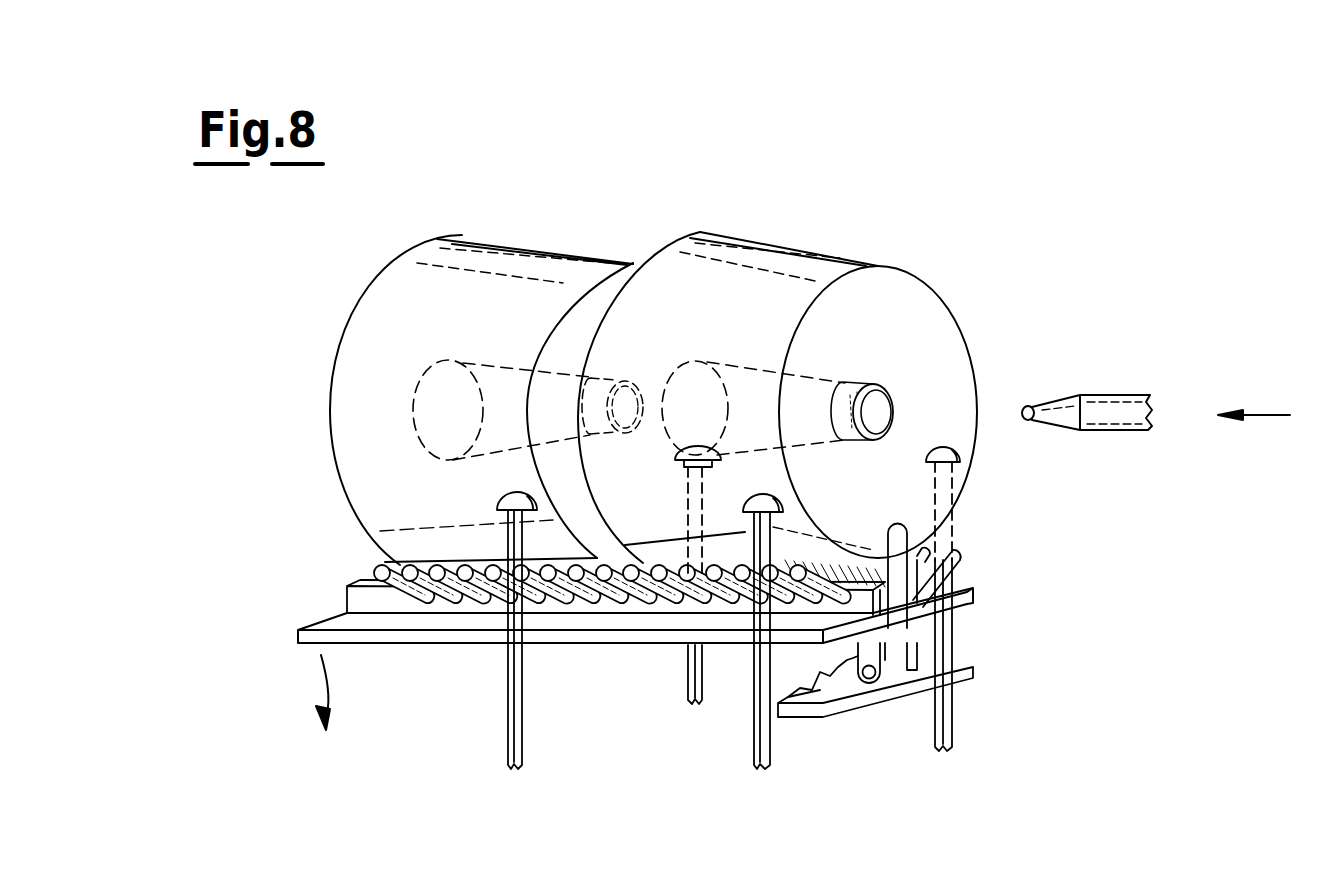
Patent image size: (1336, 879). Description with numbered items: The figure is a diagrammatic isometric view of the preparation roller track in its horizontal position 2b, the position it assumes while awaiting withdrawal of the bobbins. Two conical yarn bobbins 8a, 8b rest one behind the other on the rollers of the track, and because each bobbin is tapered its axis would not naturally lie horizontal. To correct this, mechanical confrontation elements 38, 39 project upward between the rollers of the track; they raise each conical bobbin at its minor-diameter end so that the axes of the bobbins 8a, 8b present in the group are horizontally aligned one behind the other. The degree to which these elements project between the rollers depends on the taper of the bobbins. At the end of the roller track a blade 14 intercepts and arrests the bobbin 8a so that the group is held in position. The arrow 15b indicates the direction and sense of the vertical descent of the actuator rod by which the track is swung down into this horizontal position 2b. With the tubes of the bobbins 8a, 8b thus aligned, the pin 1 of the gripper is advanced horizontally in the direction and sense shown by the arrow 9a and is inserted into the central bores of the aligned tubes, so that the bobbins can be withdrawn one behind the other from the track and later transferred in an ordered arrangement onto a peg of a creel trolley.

The pin 1 is at (1103, 412).
The preparation roller track 2b is at (303, 629).
The bobbin 8a is at (763, 282).
The bobbin 8b is at (478, 266).
The arrow 9a is at (1263, 415).
The blade 14 is at (903, 590).
The arrow 15b is at (316, 688).
The mechanical confrontation element 38 is at (510, 733).
The mechanical confrontation element 39 is at (764, 743).